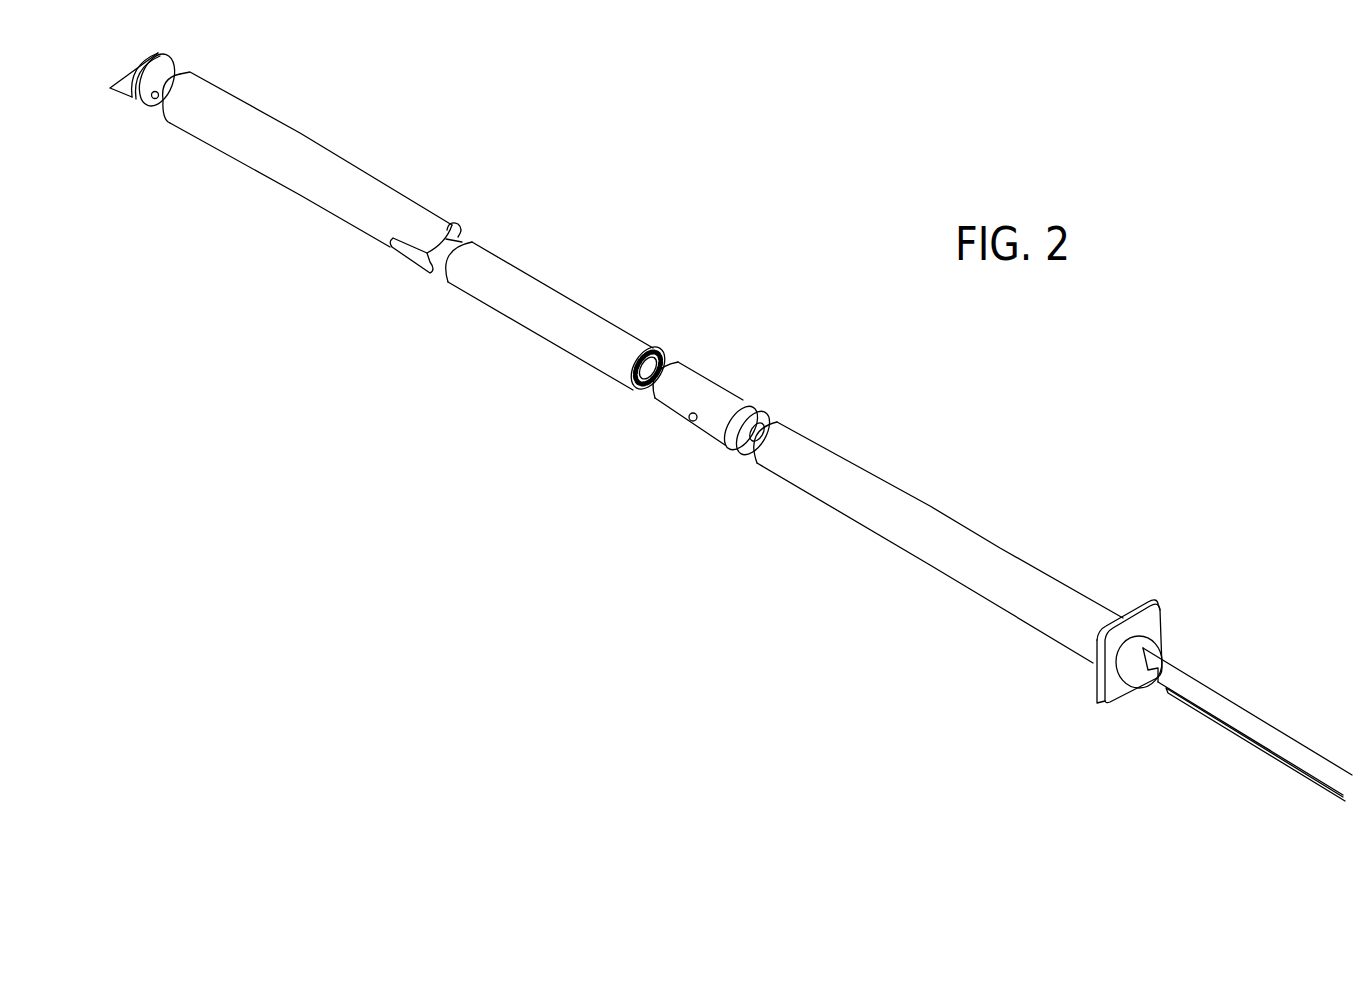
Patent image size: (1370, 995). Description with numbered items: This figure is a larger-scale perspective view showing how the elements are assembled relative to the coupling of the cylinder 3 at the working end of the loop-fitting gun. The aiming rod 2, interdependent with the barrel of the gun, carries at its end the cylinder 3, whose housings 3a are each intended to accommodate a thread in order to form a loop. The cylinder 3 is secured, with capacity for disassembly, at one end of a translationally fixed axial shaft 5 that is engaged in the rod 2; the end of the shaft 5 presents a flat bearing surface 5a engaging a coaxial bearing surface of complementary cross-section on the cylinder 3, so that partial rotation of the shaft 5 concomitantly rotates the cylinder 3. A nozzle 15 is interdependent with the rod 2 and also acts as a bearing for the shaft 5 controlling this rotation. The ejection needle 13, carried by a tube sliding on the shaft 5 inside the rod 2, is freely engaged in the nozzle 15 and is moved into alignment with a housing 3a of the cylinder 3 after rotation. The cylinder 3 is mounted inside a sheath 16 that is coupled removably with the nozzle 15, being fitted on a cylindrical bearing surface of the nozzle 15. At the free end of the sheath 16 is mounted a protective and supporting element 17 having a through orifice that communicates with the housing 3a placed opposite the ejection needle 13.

The aiming rod 2 is at (839, 493).
The cylinder 3 is at (522, 302).
The housing 3a is at (641, 386).
The axial shaft 5 is at (1205, 694).
The flat bearing surface 5a is at (1148, 673).
The needle 13 is at (1213, 723).
The nozzle 15 is at (713, 418).
The sheath 16 is at (279, 162).
The protective and supporting element 17 is at (143, 98).